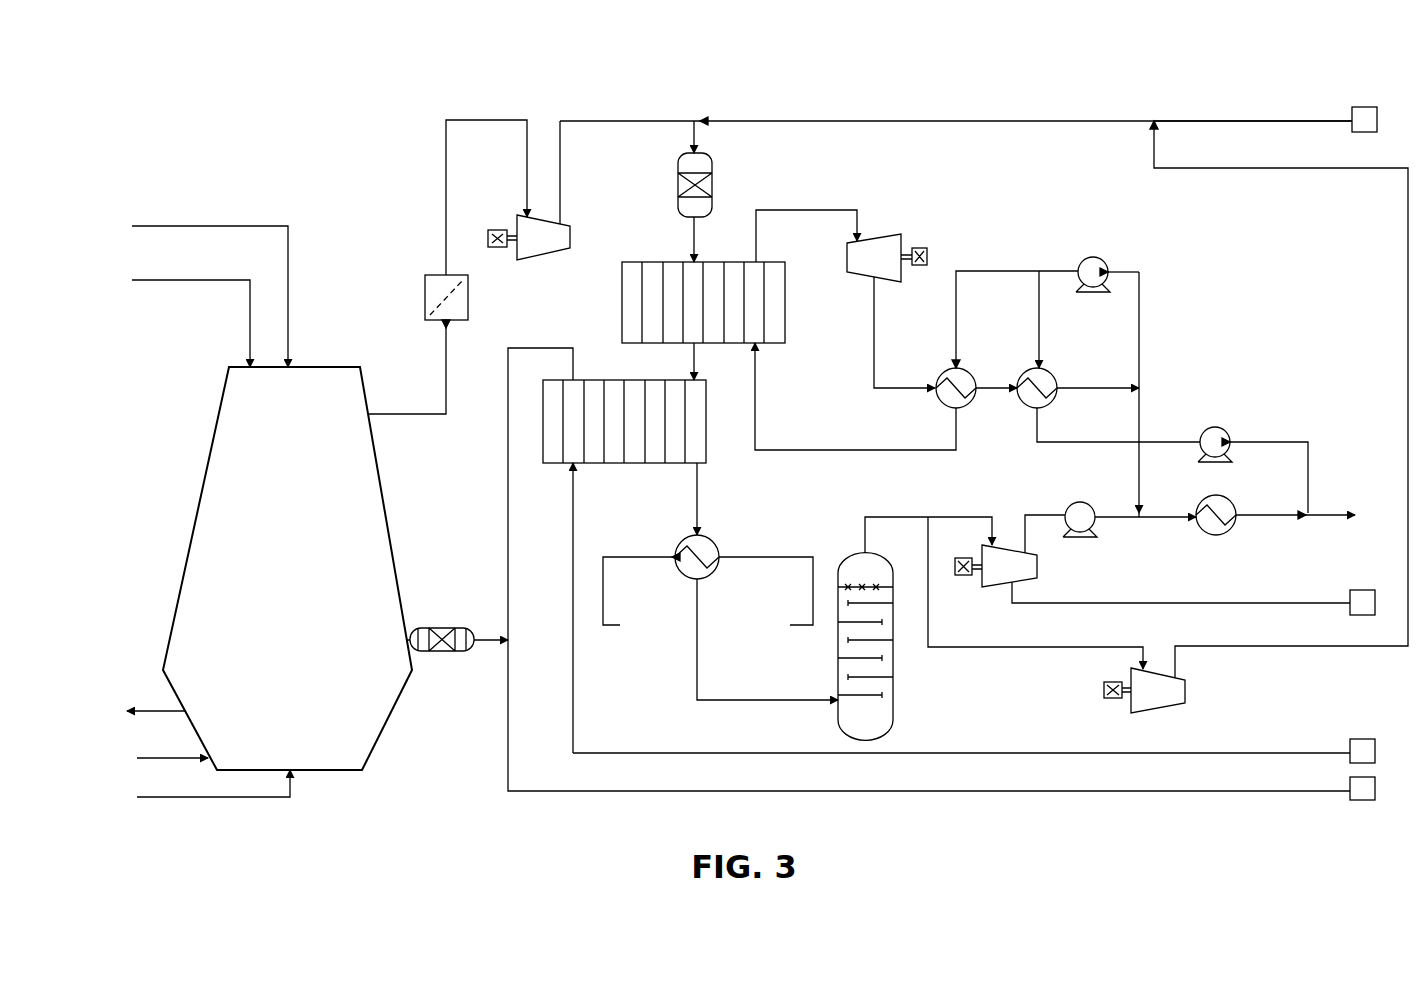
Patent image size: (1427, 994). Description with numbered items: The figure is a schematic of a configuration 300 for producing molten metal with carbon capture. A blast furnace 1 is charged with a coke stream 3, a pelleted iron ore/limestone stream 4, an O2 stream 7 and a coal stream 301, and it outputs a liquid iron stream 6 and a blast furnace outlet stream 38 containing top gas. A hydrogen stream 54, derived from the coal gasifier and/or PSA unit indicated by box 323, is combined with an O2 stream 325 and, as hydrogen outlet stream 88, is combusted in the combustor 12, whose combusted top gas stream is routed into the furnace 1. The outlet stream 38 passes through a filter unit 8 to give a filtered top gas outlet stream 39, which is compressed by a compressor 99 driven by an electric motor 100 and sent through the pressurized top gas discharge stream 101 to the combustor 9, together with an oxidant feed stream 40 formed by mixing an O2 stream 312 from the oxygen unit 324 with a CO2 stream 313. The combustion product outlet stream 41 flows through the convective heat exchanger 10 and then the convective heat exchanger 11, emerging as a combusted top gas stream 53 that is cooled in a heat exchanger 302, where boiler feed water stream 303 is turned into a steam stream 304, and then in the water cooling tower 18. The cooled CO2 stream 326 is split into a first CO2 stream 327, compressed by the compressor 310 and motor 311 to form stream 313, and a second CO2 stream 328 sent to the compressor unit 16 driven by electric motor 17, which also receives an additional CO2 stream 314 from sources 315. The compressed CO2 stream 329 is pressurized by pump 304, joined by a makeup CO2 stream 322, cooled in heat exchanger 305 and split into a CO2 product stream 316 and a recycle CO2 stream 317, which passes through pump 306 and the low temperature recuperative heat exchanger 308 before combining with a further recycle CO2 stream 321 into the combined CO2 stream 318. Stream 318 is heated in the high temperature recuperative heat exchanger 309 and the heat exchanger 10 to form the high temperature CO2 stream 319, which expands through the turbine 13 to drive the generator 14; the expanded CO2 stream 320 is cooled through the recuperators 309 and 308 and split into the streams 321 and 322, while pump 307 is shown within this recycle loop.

The configuration 300 is at (228, 126).
The blast furnace 1 is at (286, 555).
The coke stream 3 is at (165, 283).
The pelleted iron ore/limestone stream 4 is at (185, 229).
The liquid iron stream 6 is at (148, 708).
The O2 stream 7 is at (159, 756).
The coal stream 301 is at (179, 796).
The combustor 12 is at (443, 626).
The filter unit 8 is at (425, 282).
The blast furnace outlet stream 38 is at (444, 370).
The filtered top gas outlet stream 39 is at (444, 197).
The compressor 99 is at (545, 262).
The electric motor 100 is at (497, 228).
The pressurized top gas discharge stream 101 is at (562, 180).
The oxidant feed stream 40 is at (768, 120).
The O2 stream 312 is at (1198, 120).
The CO2 stream 313 is at (1220, 168).
The process or unit 324 is at (1360, 107).
The combustor 9 is at (678, 181).
The combustion product outlet stream 41 is at (692, 234).
The convective heat exchanger 10 is at (630, 260).
The convective heat exchanger 11 is at (603, 378).
The high temperature CO2 stream 319 is at (786, 208).
The turbine 13 is at (885, 236).
The generator 14 is at (922, 246).
The expanded CO2 stream 320 is at (873, 370).
The high temperature recuperative heat exchanger 309 is at (945, 372).
The low temperature recuperative heat exchanger 308 is at (1050, 372).
The combined CO2 stream 318 is at (960, 268).
The pump 307 is at (1105, 260).
The further recycle CO2 stream 321 is at (1141, 327).
The recycle CO2 stream 317 is at (1160, 442).
The pump 306 is at (1228, 430).
The hydrogen outlet stream 88 is at (507, 480).
The O2 stream 325 is at (507, 724).
The hydrogen stream 54 is at (655, 750).
The PSA unit 323 is at (1360, 738).
The combusted top gas stream 53 is at (695, 496).
The heat exchanger 302 is at (715, 545).
The boiler feed water stream 303 is at (610, 628).
The steam stream / pump 304 is at (747, 560).
The water cooling tower 18 is at (895, 710).
The cooled CO2 stream 326 is at (898, 516).
The second CO2 stream 328 is at (962, 515).
The first CO2 stream 327 is at (990, 649).
The compressed CO2 stream 329 is at (1022, 513).
The compressor unit 16 is at (1038, 566).
The electric motor 17 is at (965, 578).
The additional CO2 stream 314 is at (1150, 602).
The additional sources 315 is at (1360, 590).
The makeup CO2 stream 322 is at (1141, 486).
The heat exchanger 305 is at (1232, 530).
The CO2 product stream 316 is at (1333, 514).
The compressor 310 is at (1190, 688).
The motor 311 is at (1112, 702).